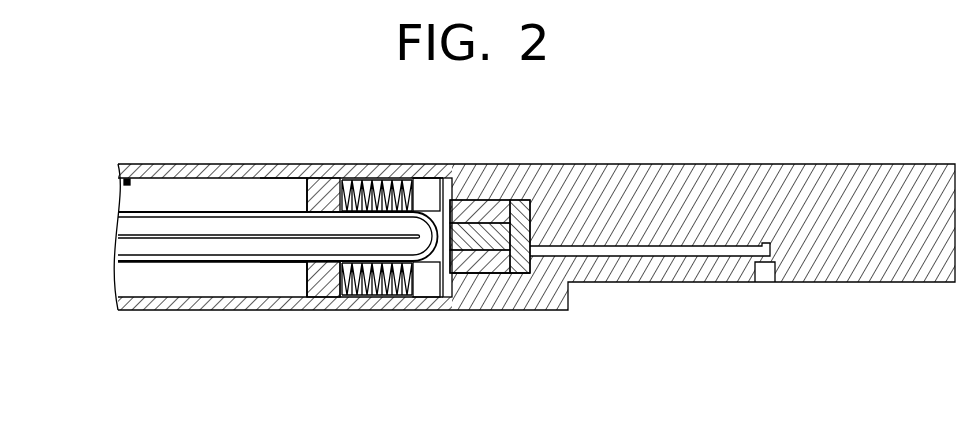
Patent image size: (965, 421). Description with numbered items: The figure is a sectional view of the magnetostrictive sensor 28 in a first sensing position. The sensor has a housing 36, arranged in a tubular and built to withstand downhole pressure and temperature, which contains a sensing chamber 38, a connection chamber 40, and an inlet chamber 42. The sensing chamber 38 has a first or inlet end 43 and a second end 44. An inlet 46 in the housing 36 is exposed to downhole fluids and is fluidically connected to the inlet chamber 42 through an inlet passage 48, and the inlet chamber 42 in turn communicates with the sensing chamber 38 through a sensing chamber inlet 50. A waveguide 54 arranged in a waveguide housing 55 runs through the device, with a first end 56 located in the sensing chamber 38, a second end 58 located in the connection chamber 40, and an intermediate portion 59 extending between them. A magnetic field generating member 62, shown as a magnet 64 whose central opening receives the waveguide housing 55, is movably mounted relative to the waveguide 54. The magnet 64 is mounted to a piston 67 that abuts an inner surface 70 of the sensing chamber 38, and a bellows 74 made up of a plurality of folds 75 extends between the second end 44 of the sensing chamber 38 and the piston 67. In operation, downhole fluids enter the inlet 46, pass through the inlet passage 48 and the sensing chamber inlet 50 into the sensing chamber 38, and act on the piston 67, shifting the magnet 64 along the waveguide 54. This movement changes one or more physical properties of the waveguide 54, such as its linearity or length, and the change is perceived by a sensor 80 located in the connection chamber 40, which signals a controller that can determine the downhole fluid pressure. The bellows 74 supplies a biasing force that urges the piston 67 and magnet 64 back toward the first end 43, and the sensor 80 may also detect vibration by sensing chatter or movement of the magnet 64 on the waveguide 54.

The magnetostrictive sensor 28 is at (423, 130).
The housing 36 is at (660, 161).
The sensing chamber 38 is at (458, 270).
The connection chamber 40 is at (215, 200).
The inlet chamber 42 is at (518, 196).
The first end 43 is at (422, 265).
The second end 44 is at (342, 292).
The inlet 46 is at (776, 290).
The inlet passage 48 is at (606, 250).
The sensing chamber inlet 50 is at (498, 272).
The waveguide 54 is at (228, 276).
The waveguide housing 55 is at (285, 265).
The first end 56 is at (128, 245).
The second end 58 is at (428, 268).
The intermediate portion 59 is at (166, 226).
The magnetic field generating member 62 is at (460, 210).
The magnet 64 is at (397, 176).
The piston 67 is at (424, 177).
The inner surface 70 is at (330, 190).
The bellows 74 is at (362, 298).
The folds 75 is at (293, 192).
The sensor 80 is at (122, 185).